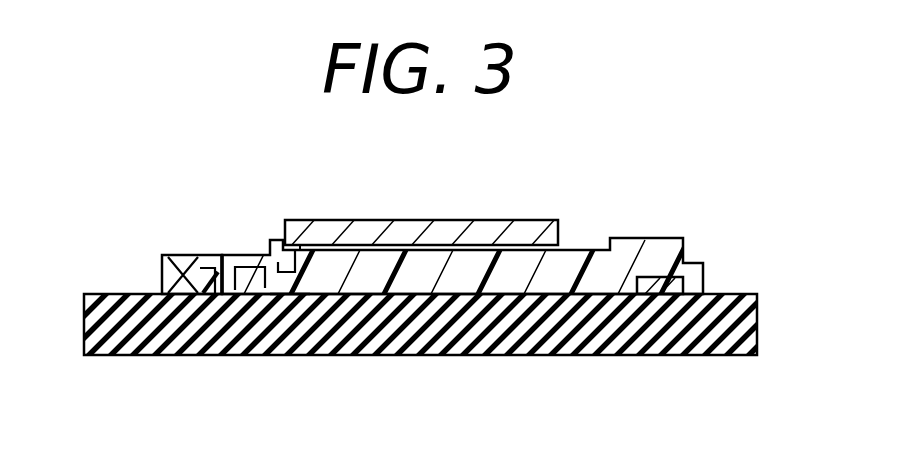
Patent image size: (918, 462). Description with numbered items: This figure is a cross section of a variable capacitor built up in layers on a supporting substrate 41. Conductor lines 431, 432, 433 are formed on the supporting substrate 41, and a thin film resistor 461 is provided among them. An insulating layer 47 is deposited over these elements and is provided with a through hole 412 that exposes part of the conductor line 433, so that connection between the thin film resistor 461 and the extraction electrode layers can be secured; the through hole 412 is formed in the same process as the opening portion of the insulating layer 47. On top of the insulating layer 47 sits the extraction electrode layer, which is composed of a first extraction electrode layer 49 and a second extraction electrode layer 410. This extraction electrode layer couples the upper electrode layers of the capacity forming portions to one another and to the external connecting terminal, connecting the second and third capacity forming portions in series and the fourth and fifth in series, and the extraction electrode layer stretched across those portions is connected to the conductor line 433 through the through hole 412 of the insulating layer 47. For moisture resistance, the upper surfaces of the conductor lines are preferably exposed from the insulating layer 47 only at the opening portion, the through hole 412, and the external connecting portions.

The supporting substrate 41 is at (110, 342).
The insulating layer 47 is at (650, 243).
The conductor line 431 is at (705, 282).
The conductor line 432 is at (165, 272).
The conductor line 433 is at (285, 294).
The second extraction electrode layer 410 is at (448, 228).
The through hole 412 is at (282, 254).
The first extraction electrode layer 49 is at (530, 247).
The thin film resistor 461 is at (212, 260).